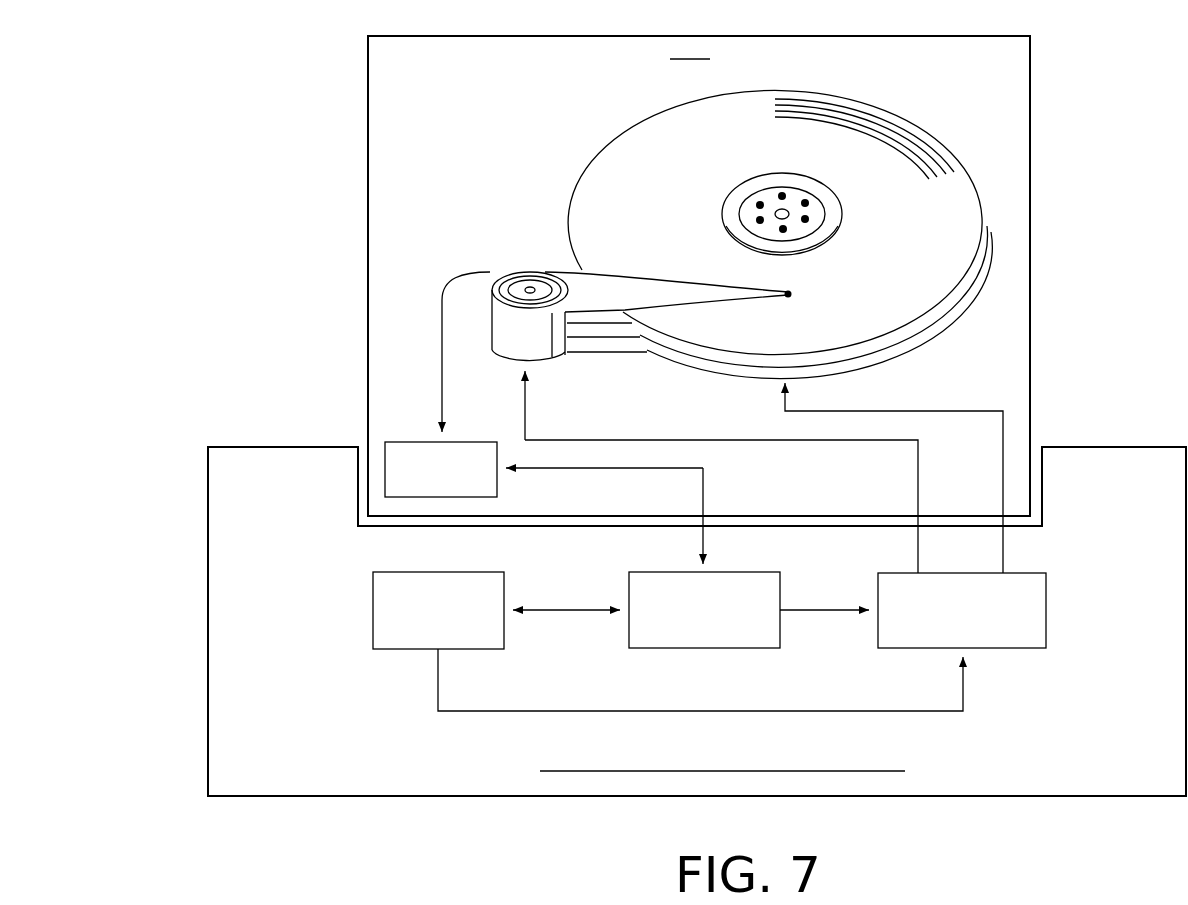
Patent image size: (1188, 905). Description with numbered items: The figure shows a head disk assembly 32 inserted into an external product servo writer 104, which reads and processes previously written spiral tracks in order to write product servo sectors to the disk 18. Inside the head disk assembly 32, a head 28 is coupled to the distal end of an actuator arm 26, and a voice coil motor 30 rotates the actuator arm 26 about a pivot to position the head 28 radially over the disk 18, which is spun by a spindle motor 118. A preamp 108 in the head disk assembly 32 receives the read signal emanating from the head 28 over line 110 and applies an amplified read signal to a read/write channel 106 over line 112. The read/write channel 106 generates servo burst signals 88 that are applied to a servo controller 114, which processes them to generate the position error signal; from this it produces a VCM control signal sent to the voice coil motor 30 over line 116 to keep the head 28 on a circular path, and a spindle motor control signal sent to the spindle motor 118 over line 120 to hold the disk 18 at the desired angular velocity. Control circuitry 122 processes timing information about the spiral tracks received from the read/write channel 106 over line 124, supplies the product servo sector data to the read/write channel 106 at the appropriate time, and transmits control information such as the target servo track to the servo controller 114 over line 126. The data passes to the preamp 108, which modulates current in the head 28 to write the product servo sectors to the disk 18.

The disk 18 is at (905, 325).
The actuator arm 26 is at (675, 287).
The head 28 is at (791, 296).
The voice coil motor 30 is at (519, 262).
The head disk assembly 32 is at (368, 172).
The servo burst signals 88 is at (828, 613).
The external product servo writer 104 is at (208, 645).
The read/write channel 106 is at (705, 649).
The preamp 108 is at (396, 440).
The line 110 is at (442, 341).
The line 112 is at (710, 478).
The servo controller 114 is at (1048, 611).
The line 116 is at (918, 478).
The spindle motor 118 is at (852, 226).
The line 120 is at (1003, 478).
The control circuitry 122 is at (373, 609).
The line 124 is at (567, 613).
The line 126 is at (438, 687).